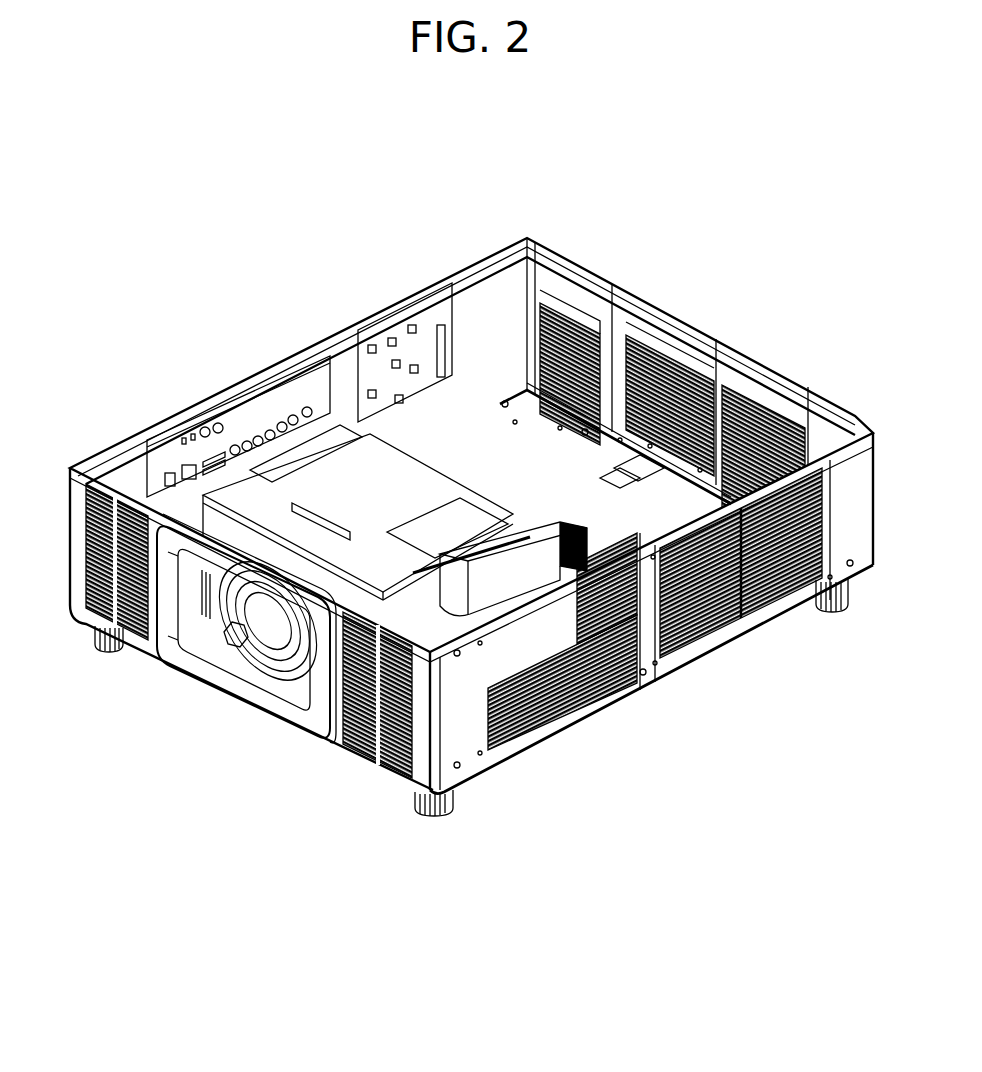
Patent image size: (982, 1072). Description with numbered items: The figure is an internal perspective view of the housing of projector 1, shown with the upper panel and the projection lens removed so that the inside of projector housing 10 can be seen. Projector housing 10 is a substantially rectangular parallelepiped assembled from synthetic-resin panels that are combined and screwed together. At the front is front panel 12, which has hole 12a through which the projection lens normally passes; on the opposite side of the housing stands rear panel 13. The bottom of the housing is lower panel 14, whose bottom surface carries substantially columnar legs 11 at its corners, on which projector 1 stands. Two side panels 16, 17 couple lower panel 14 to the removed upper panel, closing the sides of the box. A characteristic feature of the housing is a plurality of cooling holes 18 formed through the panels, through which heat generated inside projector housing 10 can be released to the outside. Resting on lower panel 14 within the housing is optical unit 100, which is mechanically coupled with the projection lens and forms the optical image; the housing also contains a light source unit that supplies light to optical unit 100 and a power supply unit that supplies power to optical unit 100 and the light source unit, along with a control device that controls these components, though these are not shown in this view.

The projector 1 is at (118, 329).
The projector housing 10 is at (118, 430).
The legs 11 is at (838, 610).
The front panel 12 is at (350, 750).
The hole 12a is at (303, 720).
The rear panel 13 is at (672, 313).
The lower panel 14 is at (483, 450).
The side panel 16 is at (748, 622).
The side panel 17 is at (222, 390).
The cooling holes 18 is at (140, 640).
The optical unit 100 is at (359, 454).